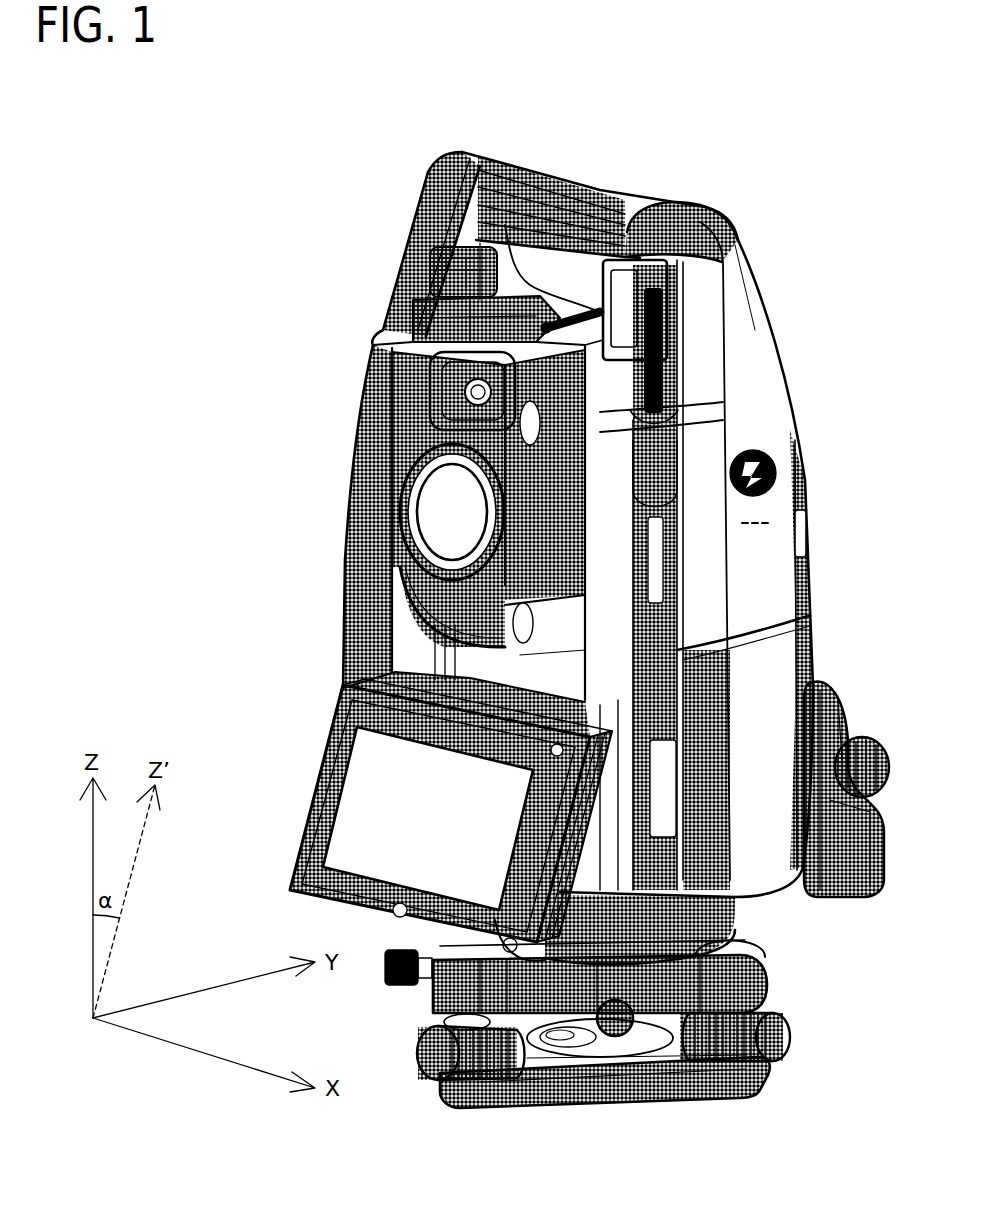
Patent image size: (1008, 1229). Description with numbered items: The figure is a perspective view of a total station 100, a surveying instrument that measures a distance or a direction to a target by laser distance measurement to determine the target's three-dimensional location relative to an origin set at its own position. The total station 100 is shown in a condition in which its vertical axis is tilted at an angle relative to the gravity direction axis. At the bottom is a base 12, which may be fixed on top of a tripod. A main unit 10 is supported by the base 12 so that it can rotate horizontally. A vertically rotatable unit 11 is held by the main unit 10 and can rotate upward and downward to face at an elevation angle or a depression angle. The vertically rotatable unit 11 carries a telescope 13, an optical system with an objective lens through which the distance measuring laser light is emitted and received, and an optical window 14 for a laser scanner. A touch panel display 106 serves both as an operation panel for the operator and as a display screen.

The total station 100 is at (815, 178).
The main unit 10 is at (775, 610).
The vertically rotatable unit 11 is at (407, 440).
The telescope 13 is at (453, 530).
The optical window 14 is at (410, 376).
The display 106 is at (373, 797).
The base 12 is at (740, 990).